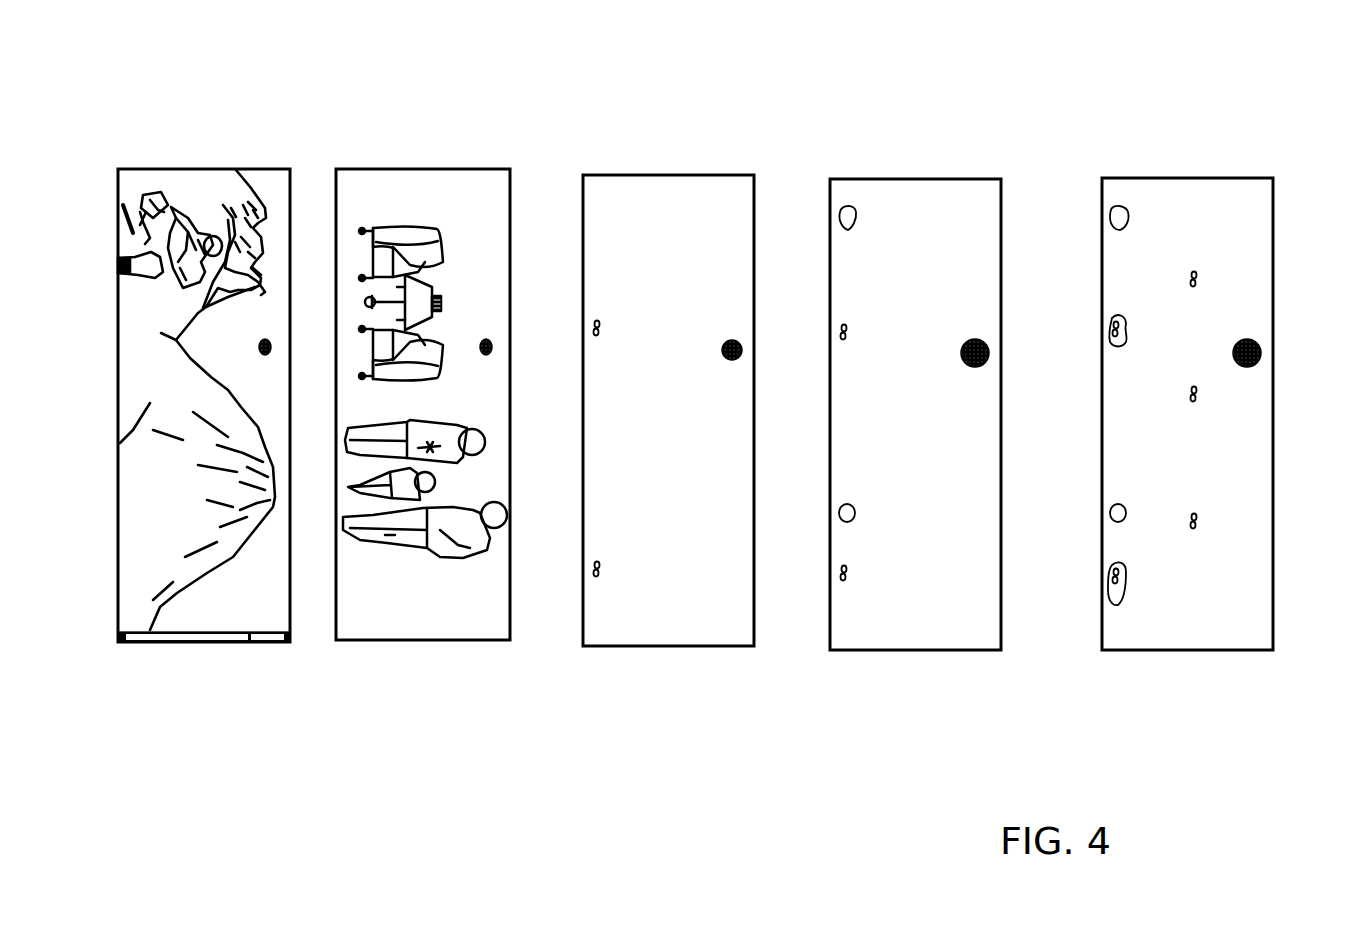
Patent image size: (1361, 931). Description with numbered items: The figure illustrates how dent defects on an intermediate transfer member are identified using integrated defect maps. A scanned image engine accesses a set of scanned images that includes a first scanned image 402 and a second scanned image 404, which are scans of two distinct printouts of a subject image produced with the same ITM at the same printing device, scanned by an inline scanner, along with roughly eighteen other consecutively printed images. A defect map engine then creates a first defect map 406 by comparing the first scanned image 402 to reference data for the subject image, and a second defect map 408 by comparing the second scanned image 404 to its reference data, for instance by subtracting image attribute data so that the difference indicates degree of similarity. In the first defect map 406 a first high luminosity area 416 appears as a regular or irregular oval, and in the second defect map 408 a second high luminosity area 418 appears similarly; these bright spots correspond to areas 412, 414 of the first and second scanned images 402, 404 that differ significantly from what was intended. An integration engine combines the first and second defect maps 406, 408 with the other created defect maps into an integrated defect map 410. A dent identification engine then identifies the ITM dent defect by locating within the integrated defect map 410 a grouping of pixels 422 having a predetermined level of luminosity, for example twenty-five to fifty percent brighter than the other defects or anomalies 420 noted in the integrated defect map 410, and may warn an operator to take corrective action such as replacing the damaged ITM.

The first scanned image 402 is at (235, 635).
The second scanned image 404 is at (460, 641).
The first defect map 406 is at (708, 646).
The second defect map 408 is at (950, 647).
The integrated defect map 410 is at (1207, 652).
The area of first scanned image 412 is at (275, 342).
The area of second scanned image 414 is at (493, 343).
The first high luminosity area 416 is at (741, 349).
The second high luminosity area 418 is at (990, 350).
The other defects or anomalies 420 is at (1112, 322).
The grouping of pixels 422 is at (1250, 338).